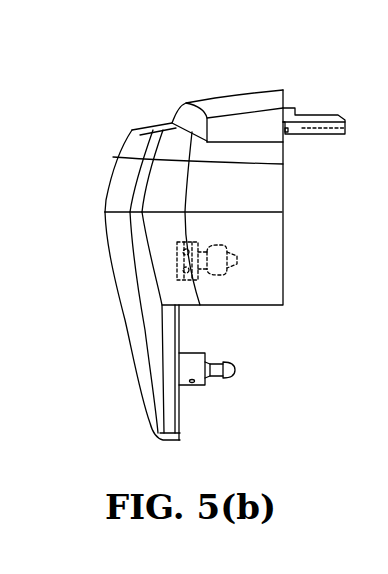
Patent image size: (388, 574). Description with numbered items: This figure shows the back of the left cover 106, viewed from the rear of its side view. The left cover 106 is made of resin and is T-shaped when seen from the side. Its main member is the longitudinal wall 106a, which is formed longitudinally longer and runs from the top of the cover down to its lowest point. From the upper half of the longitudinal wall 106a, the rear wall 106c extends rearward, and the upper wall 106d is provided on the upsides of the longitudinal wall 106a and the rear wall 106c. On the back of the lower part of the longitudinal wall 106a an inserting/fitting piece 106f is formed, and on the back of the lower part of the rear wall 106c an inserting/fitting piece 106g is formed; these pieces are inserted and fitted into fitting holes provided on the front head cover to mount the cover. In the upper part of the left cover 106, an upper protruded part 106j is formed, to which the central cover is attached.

The left cover 106 is at (100, 145).
The longitudinal wall 106a is at (135, 342).
The rear wall 106c is at (268, 190).
The upper wall 106d is at (223, 100).
The inserting/fitting piece 106f is at (233, 365).
The inserting/fitting piece 106g is at (237, 260).
The upper protruded part 106j is at (315, 112).